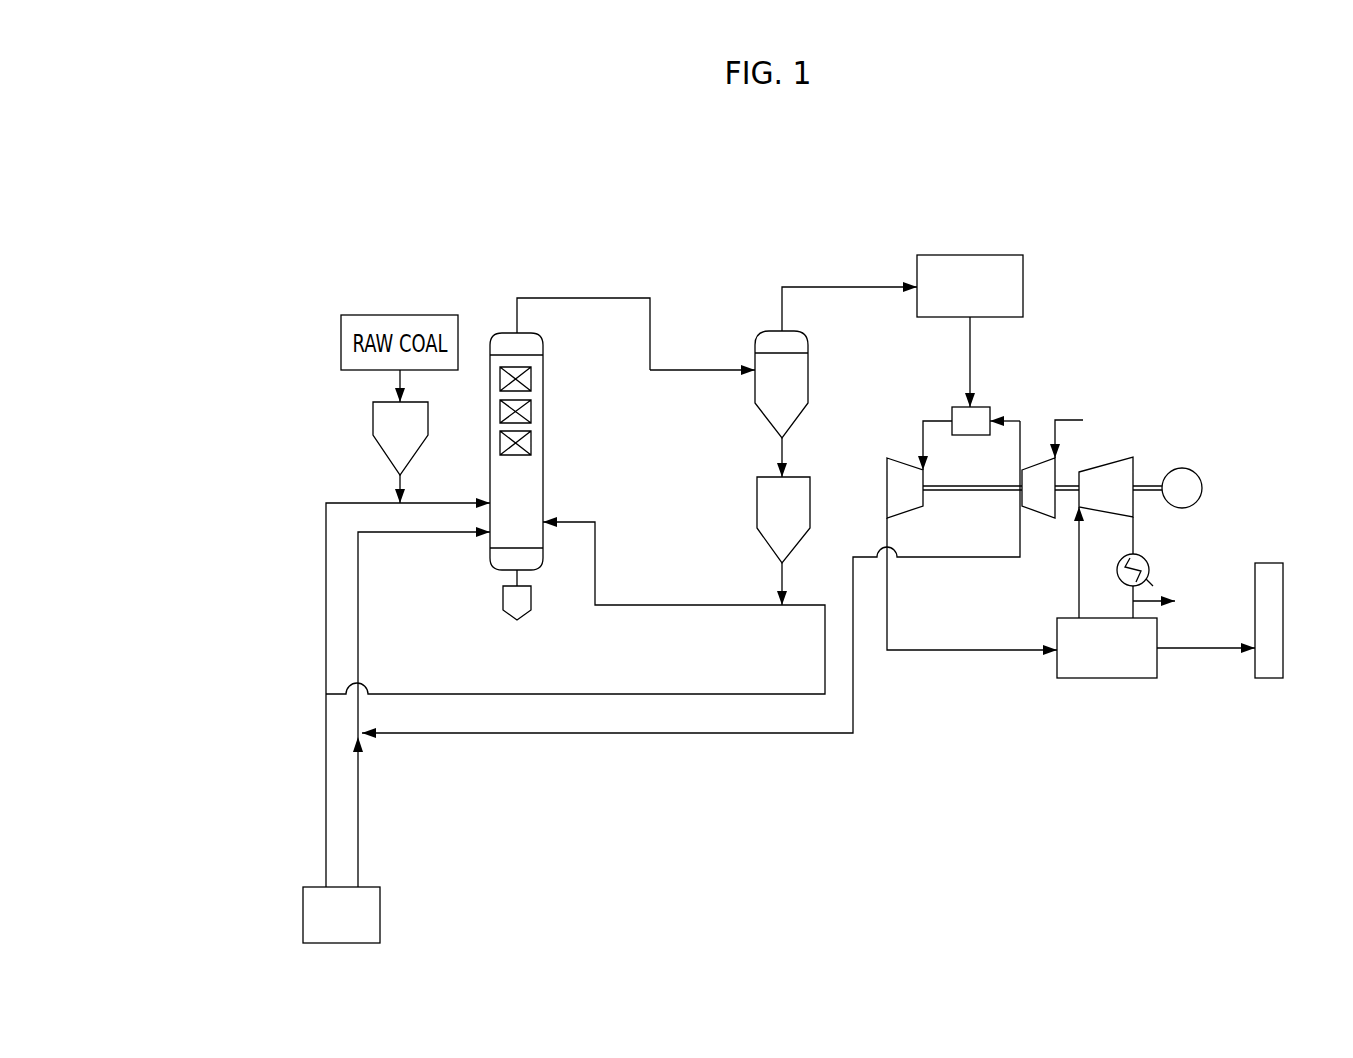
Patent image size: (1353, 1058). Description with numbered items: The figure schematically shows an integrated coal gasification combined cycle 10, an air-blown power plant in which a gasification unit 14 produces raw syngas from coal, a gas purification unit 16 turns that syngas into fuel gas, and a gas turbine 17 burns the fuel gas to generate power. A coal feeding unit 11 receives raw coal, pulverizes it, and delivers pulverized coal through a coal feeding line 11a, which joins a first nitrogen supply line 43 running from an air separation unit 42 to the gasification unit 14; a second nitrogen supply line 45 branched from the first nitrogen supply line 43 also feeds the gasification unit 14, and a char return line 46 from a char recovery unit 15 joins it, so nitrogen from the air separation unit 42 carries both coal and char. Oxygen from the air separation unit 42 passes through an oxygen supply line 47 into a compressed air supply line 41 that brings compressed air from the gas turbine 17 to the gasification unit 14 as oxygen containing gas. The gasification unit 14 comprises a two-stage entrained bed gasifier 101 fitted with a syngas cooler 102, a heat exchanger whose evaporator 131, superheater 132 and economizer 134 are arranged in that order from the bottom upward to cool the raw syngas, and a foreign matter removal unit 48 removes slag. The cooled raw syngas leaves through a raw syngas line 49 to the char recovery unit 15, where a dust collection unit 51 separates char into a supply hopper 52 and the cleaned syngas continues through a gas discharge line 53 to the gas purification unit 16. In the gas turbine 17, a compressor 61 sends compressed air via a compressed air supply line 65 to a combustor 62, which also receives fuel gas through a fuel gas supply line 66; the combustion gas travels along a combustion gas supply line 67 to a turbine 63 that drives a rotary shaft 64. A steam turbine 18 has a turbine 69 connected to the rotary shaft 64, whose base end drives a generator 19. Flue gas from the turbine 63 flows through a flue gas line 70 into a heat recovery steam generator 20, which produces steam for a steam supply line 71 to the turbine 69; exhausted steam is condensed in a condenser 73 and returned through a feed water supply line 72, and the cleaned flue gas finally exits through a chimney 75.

The integrated coal gasification combined cycle 10 is at (737, 185).
The coal feeding unit 11 is at (370, 418).
The coal feeding line 11a is at (393, 479).
The gasification unit 14 is at (564, 450).
The char recovery unit 15 is at (767, 325).
The gas purification unit 16 is at (970, 255).
The gas turbine 17 is at (989, 448).
The steam turbine 18 is at (1121, 443).
The generator 19 is at (1198, 463).
The heat recovery steam generator 20 is at (1125, 681).
The compressed air supply line 41 is at (620, 735).
The air separation unit 42 is at (301, 913).
The first nitrogen supply line 43 is at (324, 784).
The second nitrogen supply line 45 is at (419, 693).
The char return line 46 is at (780, 578).
The oxygen supply line 47 is at (360, 784).
The foreign matter removal unit 48 is at (500, 597).
The raw syngas line 49 is at (591, 297).
The dust collection unit 51 is at (750, 382).
The supply hopper 52 is at (755, 500).
The gas discharge line 53 is at (843, 286).
The compressor 61 is at (953, 510).
The combustor 62 is at (985, 405).
The turbine 63 is at (885, 470).
The rotary shaft 64 is at (970, 493).
The compressed air supply line 65 is at (1020, 432).
The fuel gas supply line 66 is at (968, 340).
The combustion gas supply line 67 is at (930, 418).
The turbine 69 is at (1121, 460).
The flue gas line 70 is at (970, 652).
The steam supply line 71 is at (1077, 601).
The feed water supply line 72 is at (1131, 527).
The condenser 73 is at (1147, 559).
The chimney 75 is at (1265, 561).
The gasifier 101 is at (549, 578).
The syngas cooler 102 is at (590, 412).
The evaporator 131 is at (559, 445).
The superheater 132 is at (534, 412).
The economizer 134 is at (534, 381).